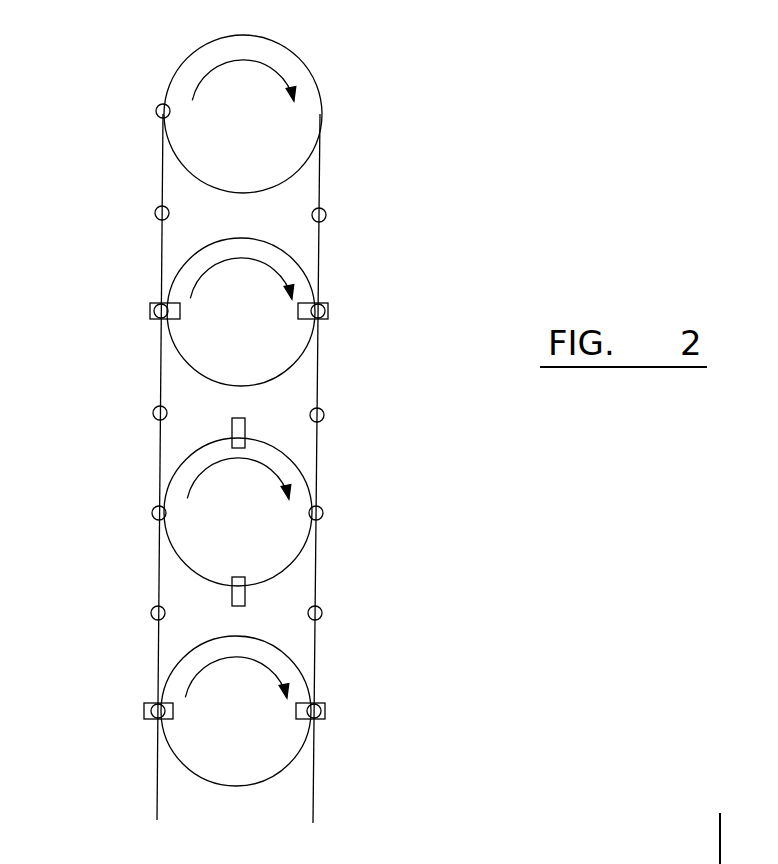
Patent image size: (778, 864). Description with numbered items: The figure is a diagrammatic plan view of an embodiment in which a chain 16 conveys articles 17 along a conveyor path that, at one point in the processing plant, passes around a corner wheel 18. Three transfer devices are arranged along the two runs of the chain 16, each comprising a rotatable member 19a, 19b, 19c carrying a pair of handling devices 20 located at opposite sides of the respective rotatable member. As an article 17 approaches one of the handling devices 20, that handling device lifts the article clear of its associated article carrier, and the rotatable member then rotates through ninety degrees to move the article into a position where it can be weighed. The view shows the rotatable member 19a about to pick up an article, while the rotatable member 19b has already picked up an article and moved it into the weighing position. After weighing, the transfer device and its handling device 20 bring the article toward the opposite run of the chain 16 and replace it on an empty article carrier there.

The chain 16 is at (322, 611).
The articles 17 is at (324, 411).
The corner wheel 18 is at (187, 78).
The rotatable member 19a is at (295, 262).
The rotatable member 19b is at (295, 463).
The rotatable member 19c is at (295, 665).
The handling devices 20 is at (150, 308).